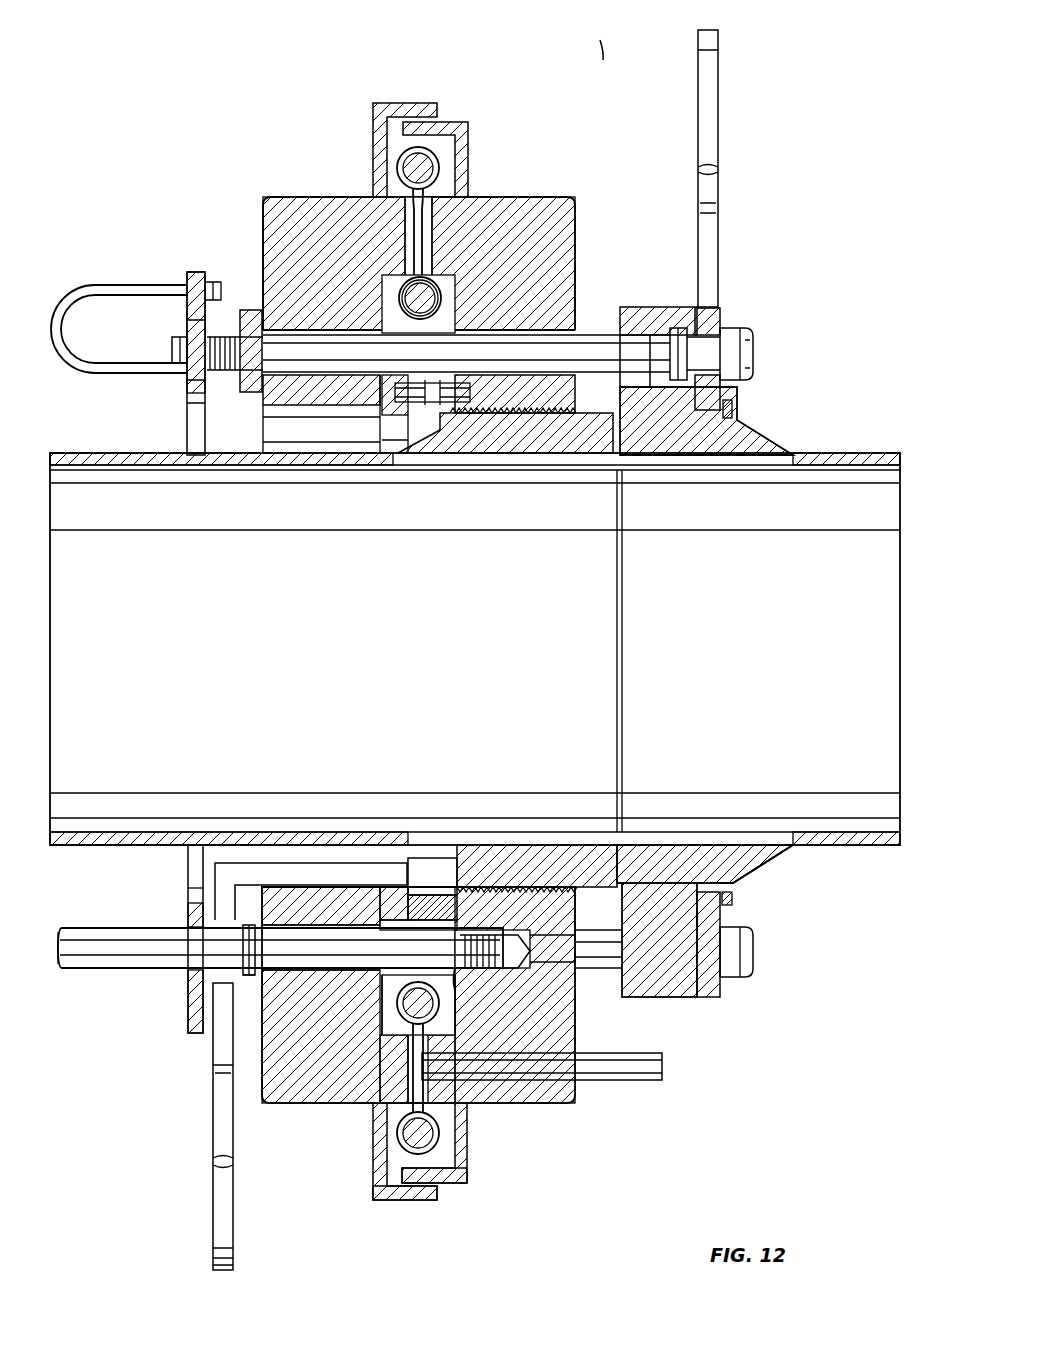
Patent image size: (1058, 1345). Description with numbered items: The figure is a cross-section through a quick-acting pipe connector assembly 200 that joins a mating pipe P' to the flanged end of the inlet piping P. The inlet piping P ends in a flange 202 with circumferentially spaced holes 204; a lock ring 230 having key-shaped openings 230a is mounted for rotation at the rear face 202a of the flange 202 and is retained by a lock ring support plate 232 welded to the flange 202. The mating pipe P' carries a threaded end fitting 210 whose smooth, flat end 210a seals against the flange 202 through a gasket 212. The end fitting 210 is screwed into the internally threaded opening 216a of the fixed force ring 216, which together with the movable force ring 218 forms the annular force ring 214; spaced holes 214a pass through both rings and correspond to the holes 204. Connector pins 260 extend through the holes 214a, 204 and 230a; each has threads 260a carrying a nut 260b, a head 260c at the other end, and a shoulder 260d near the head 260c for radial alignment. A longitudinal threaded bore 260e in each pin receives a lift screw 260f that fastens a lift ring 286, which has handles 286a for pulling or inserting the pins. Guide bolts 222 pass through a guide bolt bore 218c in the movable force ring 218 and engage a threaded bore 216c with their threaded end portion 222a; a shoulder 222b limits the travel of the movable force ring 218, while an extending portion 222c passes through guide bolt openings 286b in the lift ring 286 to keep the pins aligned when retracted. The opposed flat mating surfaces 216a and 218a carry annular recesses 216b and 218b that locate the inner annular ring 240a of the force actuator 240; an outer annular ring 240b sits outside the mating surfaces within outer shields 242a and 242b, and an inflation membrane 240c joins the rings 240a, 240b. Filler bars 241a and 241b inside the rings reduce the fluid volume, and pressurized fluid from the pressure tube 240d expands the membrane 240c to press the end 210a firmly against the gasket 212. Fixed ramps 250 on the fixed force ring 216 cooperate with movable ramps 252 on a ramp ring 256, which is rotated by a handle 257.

The quick-acting pipe connector assembly 200 is at (606, 36).
The flange 202 is at (700, 997).
The rear face 202a is at (734, 410).
The holes 204 is at (628, 307).
The threaded end fitting 210 is at (515, 845).
The smooth, flat end 210a is at (650, 882).
The gasket 212 is at (616, 850).
The force ring 214 is at (327, 197).
The holes 214a is at (263, 262).
The fixed force ring 216 is at (538, 197).
The internally threaded opening / mating surface 216a is at (426, 240).
The annular recess 216b is at (462, 986).
The threaded bore 216c is at (506, 960).
The movable force ring 218 is at (285, 197).
The mating surface 218a is at (408, 1080).
The annular recess 218b is at (382, 990).
The guide bolt bore 218c is at (300, 928).
The guide bolt 222 is at (140, 968).
The threaded end portion 222a is at (533, 932).
The shoulder 222b is at (240, 985).
The extending portion 222c is at (86, 970).
The lock ring 230 is at (718, 307).
The key-shaped openings 230a is at (753, 356).
The lock ring support plate 232 is at (732, 898).
The force actuator 240 is at (448, 1160).
The inner annular ring 240a is at (400, 285).
The outer annular ring 240b is at (395, 160).
The inflation membrane 240c is at (412, 1035).
The pressure tube 240d is at (656, 1082).
The inner filler bar 241a is at (440, 292).
The outer filler bar 241b is at (438, 162).
The annular outer shield 242a is at (456, 1183).
The annular outer shield 242b is at (400, 1200).
The fixed ramps 250 is at (436, 860).
The movable ramps 252 is at (430, 895).
The ramp ring 256 is at (395, 887).
The handle 257 is at (213, 1122).
The connector pin assembly 260 is at (491, 353).
The threads 260a is at (250, 310).
The nut 260b is at (245, 392).
The head 260c is at (740, 328).
The shoulder 260d is at (705, 308).
The longitudinal threaded bore 260e is at (187, 330).
The lift screw 260f is at (172, 347).
The lift ring 286 is at (190, 272).
The handles / spaced holes 286a is at (105, 373).
The guide bolt openings 286b is at (243, 960).
The inlet piping P is at (475, 626).
The mating pipe P' is at (156, 632).